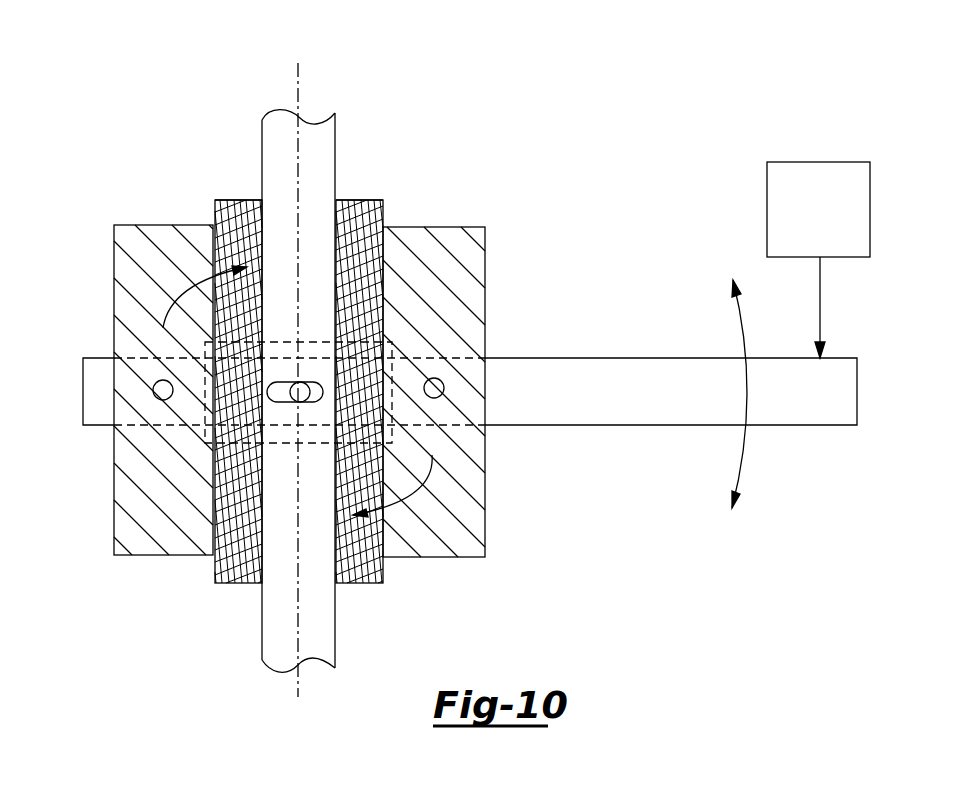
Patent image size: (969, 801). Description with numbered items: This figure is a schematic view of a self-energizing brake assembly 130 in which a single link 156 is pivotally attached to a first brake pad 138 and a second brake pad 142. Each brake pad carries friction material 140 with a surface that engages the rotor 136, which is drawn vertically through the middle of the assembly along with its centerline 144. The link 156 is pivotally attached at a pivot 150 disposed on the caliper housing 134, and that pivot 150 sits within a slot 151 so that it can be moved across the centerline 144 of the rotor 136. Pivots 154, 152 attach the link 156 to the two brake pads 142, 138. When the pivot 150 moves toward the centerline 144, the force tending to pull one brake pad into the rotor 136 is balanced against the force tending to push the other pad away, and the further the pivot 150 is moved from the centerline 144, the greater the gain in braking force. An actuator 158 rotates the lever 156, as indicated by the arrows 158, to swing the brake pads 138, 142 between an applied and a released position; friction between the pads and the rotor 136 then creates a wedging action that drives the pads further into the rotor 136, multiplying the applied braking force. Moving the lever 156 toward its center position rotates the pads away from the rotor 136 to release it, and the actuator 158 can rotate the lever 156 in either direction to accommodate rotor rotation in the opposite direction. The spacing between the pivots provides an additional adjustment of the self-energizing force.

The self-energizing brake assembly 130 is at (548, 182).
The caliper housing 134 is at (385, 573).
The rotor 136 is at (322, 132).
The first brake pad 138 is at (448, 235).
The friction material 140 is at (223, 200).
The second brake pad 142 is at (137, 254).
The centerline 144 is at (298, 86).
The pivot 150 is at (290, 400).
The slot 151 is at (277, 388).
The pivot 152 is at (153, 383).
The pivot 154 is at (445, 383).
The link 156 is at (640, 378).
The actuator 158 is at (835, 221).